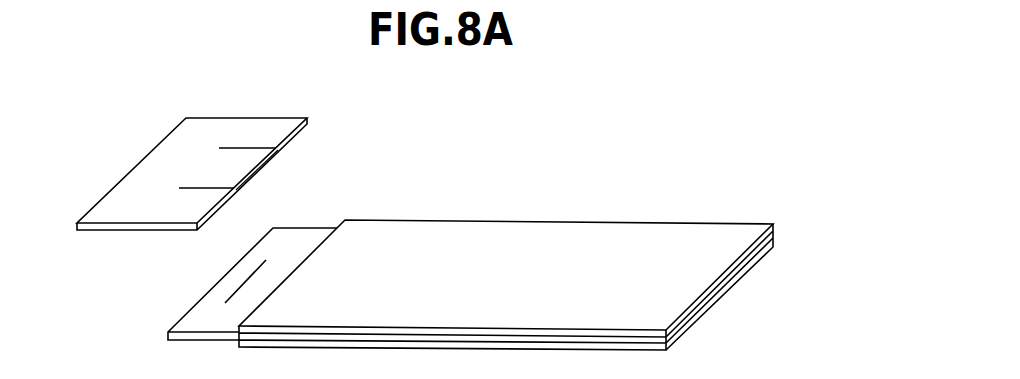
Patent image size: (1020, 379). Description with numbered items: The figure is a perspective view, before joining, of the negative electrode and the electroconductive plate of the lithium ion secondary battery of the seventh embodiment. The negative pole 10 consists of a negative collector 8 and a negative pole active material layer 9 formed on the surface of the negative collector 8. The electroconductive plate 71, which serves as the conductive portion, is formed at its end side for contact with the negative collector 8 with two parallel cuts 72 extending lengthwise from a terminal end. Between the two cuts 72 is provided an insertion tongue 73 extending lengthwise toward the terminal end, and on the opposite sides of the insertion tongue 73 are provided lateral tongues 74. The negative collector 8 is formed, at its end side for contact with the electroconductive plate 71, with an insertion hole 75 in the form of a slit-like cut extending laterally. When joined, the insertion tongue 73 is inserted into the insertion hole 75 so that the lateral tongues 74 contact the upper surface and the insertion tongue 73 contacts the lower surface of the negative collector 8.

The electroconductive plate 71 is at (148, 193).
The cuts 72 is at (200, 188).
The insertion tongue 73 is at (245, 163).
The lateral tongues 74 is at (280, 120).
The insertion hole 75 is at (252, 273).
The negative collector 8 is at (308, 238).
The negative pole active material layer 9 is at (652, 243).
The negative pole 10 is at (532, 253).